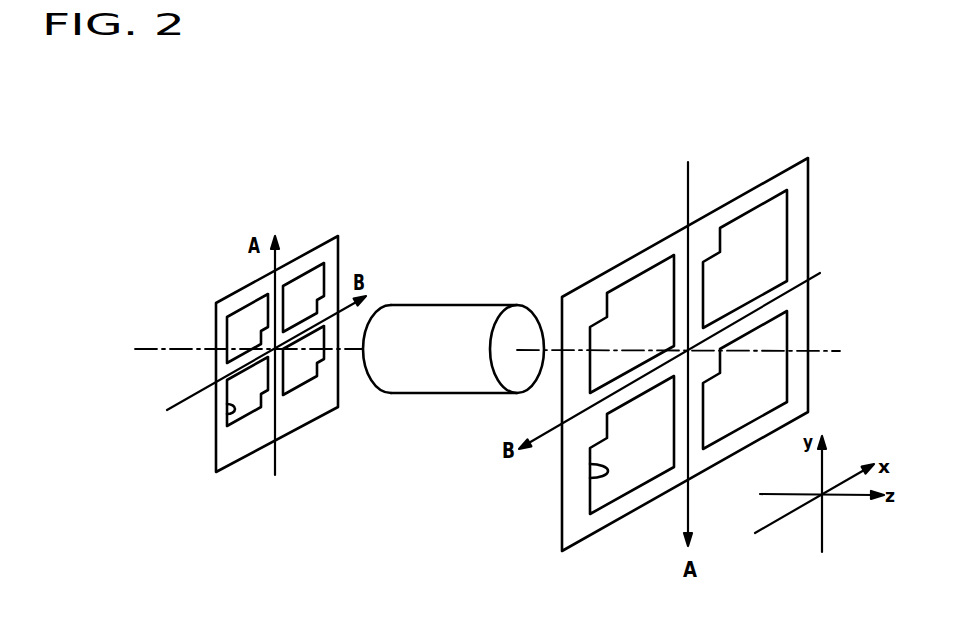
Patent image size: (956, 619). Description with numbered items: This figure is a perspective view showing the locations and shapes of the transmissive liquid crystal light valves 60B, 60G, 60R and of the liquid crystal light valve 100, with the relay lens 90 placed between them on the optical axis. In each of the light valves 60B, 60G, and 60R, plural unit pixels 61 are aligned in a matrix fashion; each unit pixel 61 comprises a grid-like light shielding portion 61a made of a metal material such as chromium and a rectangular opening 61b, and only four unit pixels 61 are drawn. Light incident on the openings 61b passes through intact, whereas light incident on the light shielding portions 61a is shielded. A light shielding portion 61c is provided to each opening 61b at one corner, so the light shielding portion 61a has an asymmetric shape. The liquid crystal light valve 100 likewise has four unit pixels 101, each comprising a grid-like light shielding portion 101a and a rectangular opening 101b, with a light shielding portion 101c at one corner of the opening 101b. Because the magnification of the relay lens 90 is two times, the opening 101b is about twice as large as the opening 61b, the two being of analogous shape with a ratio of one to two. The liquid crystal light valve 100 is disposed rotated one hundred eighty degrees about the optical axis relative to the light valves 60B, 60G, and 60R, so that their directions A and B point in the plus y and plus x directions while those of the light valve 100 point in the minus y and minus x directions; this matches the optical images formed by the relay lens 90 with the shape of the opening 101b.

The liquid crystal light valve 60R is at (312, 250).
The liquid crystal light valve 60G is at (250, 378).
The liquid crystal light valve 60B is at (250, 378).
The unit pixel 61 is at (226, 298).
The light shielding portion 61a is at (238, 460).
The opening 61b is at (222, 412).
The light shielding portion 61c is at (318, 367).
The relay lens 90 is at (455, 303).
The liquid crystal light valve 100 is at (798, 142).
The unit pixel 101 is at (620, 262).
The light shielding portion 101a is at (607, 522).
The opening 101b is at (592, 478).
The light shielding portion 101c is at (604, 309).